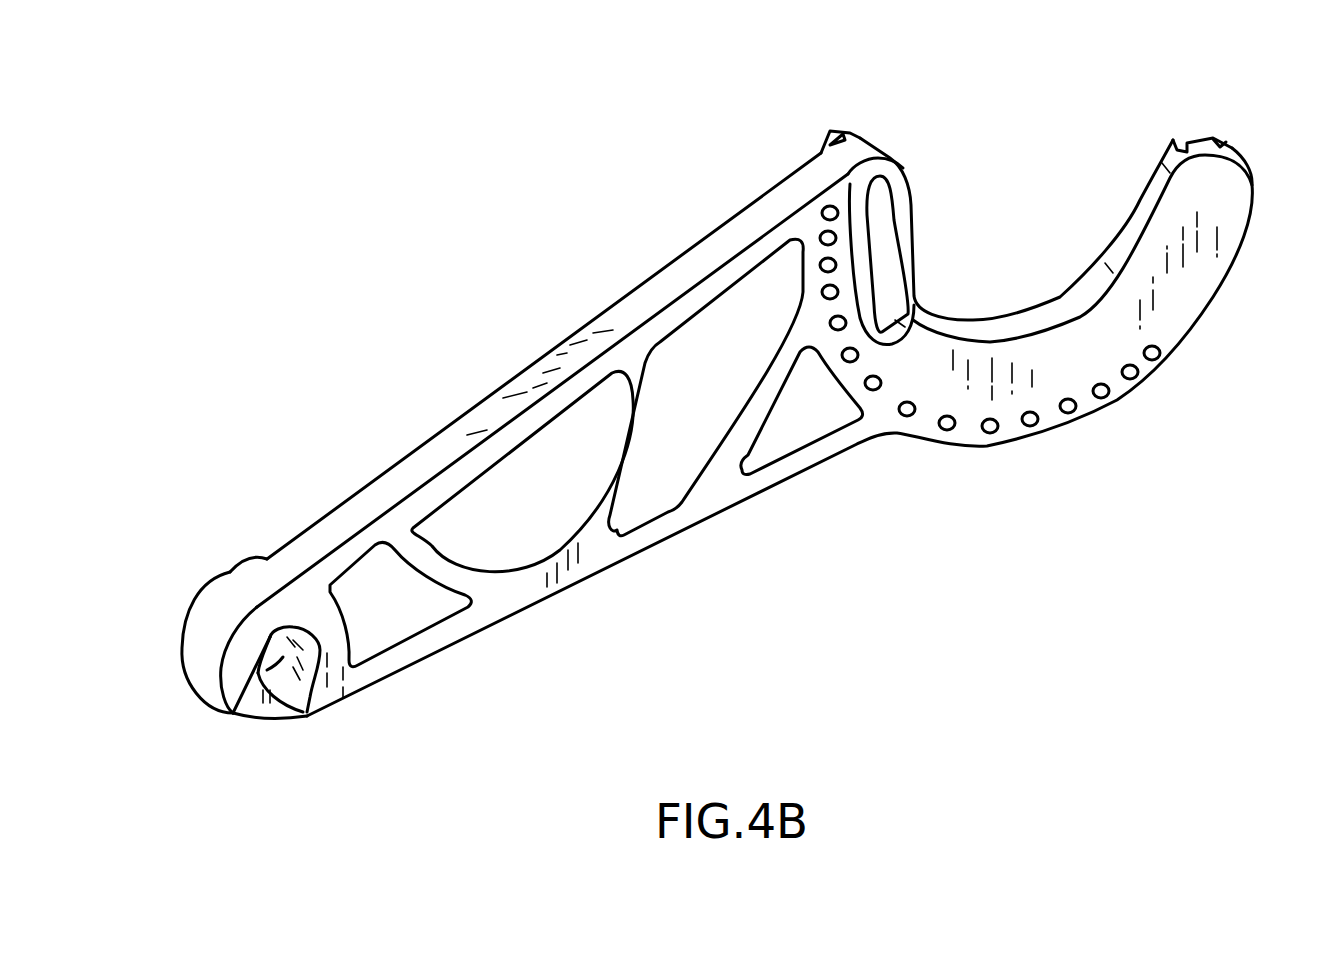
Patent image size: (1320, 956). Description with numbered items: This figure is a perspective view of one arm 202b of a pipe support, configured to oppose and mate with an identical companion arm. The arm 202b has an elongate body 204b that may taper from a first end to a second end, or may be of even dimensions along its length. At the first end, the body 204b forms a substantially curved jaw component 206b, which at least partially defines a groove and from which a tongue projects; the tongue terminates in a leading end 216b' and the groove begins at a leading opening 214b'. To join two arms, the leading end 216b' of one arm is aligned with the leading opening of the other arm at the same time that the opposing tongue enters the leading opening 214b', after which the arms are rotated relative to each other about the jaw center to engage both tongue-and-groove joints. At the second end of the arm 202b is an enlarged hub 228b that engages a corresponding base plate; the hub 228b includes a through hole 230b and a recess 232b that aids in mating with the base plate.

The arm 202b is at (488, 311).
The body 204b is at (777, 205).
The jaw component 206b is at (1177, 290).
The leading opening 214b' is at (1201, 100).
The leading end 216b' is at (867, 90).
The enlarged hub 228b is at (203, 663).
The through hole 230b is at (274, 680).
The recess 232b is at (236, 733).